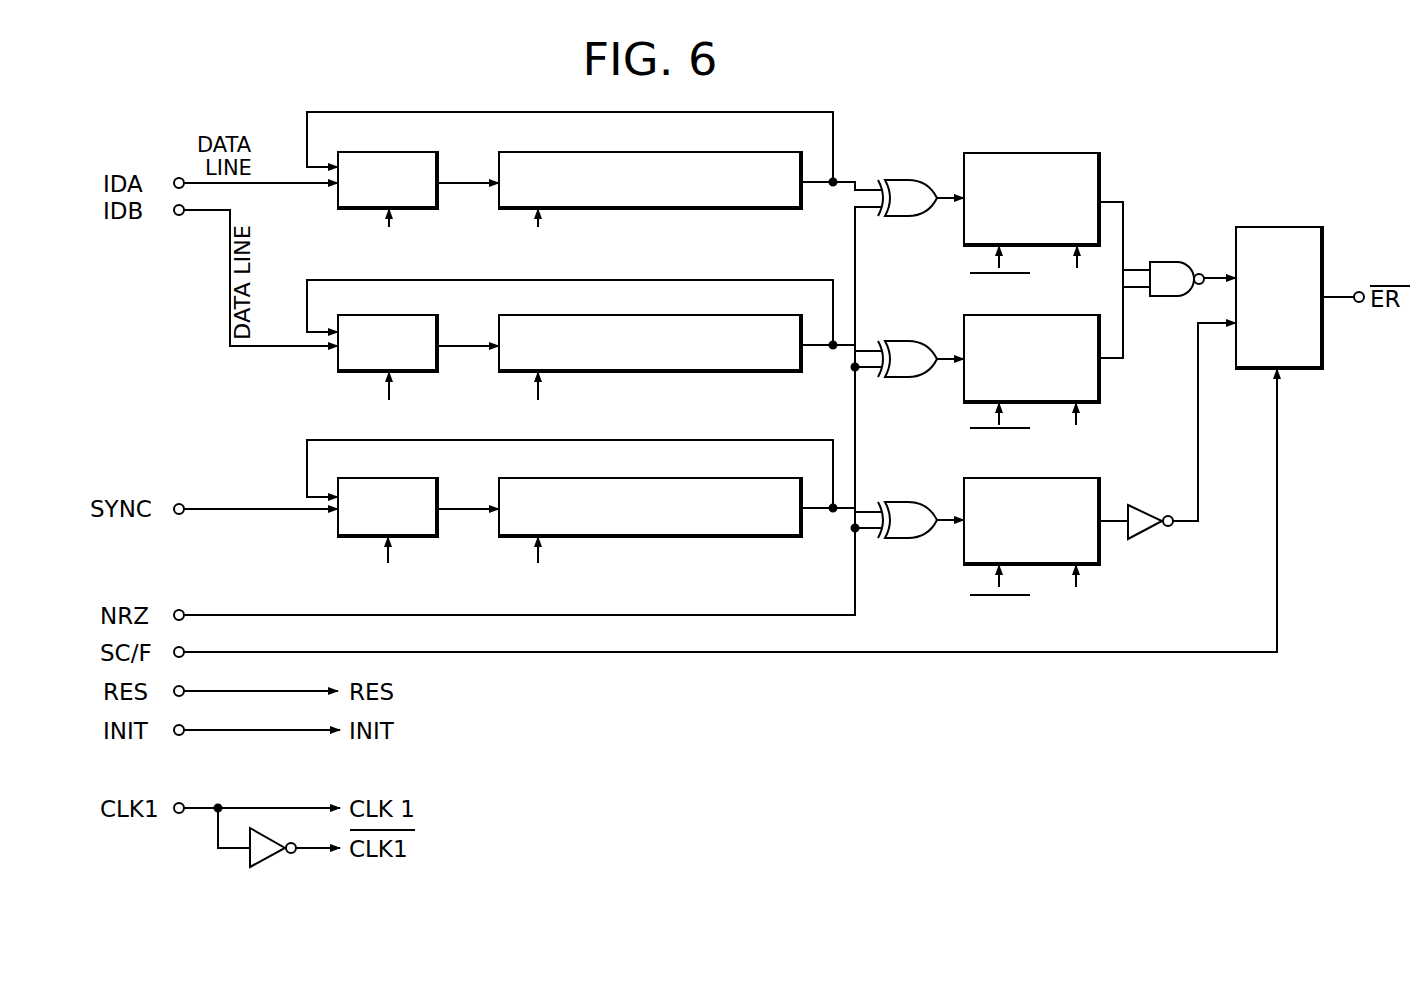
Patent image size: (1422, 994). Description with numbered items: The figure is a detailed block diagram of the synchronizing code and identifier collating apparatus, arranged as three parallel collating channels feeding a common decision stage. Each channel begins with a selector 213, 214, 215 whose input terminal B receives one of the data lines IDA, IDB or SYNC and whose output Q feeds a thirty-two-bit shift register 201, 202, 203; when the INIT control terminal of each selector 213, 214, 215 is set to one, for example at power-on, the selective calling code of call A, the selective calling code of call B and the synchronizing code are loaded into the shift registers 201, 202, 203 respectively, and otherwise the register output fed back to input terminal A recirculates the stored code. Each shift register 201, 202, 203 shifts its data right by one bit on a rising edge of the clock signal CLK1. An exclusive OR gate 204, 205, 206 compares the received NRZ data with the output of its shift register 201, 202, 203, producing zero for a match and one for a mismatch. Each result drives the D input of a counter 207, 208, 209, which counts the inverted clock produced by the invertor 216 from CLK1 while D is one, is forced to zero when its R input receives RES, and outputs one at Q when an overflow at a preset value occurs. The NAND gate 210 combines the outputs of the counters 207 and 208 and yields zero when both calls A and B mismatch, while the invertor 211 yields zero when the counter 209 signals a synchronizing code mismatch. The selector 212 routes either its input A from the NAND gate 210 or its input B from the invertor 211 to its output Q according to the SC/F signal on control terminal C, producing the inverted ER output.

The shift register 201 is at (785, 210).
The shift register 202 is at (785, 373).
The shift register 203 is at (785, 538).
The exclusive OR gate 204 is at (908, 184).
The exclusive OR gate 205 is at (910, 343).
The exclusive OR gate 206 is at (912, 503).
The counter 207 is at (1103, 190).
The counter 208 is at (1100, 385).
The counter 209 is at (1100, 550).
The NAND gate 210 is at (1174, 262).
The invertor 211 is at (1146, 505).
The selector 212 is at (1278, 227).
The selector 213 is at (425, 152).
The selector 214 is at (425, 315).
The selector 215 is at (425, 478).
The invertor 216 is at (282, 862).